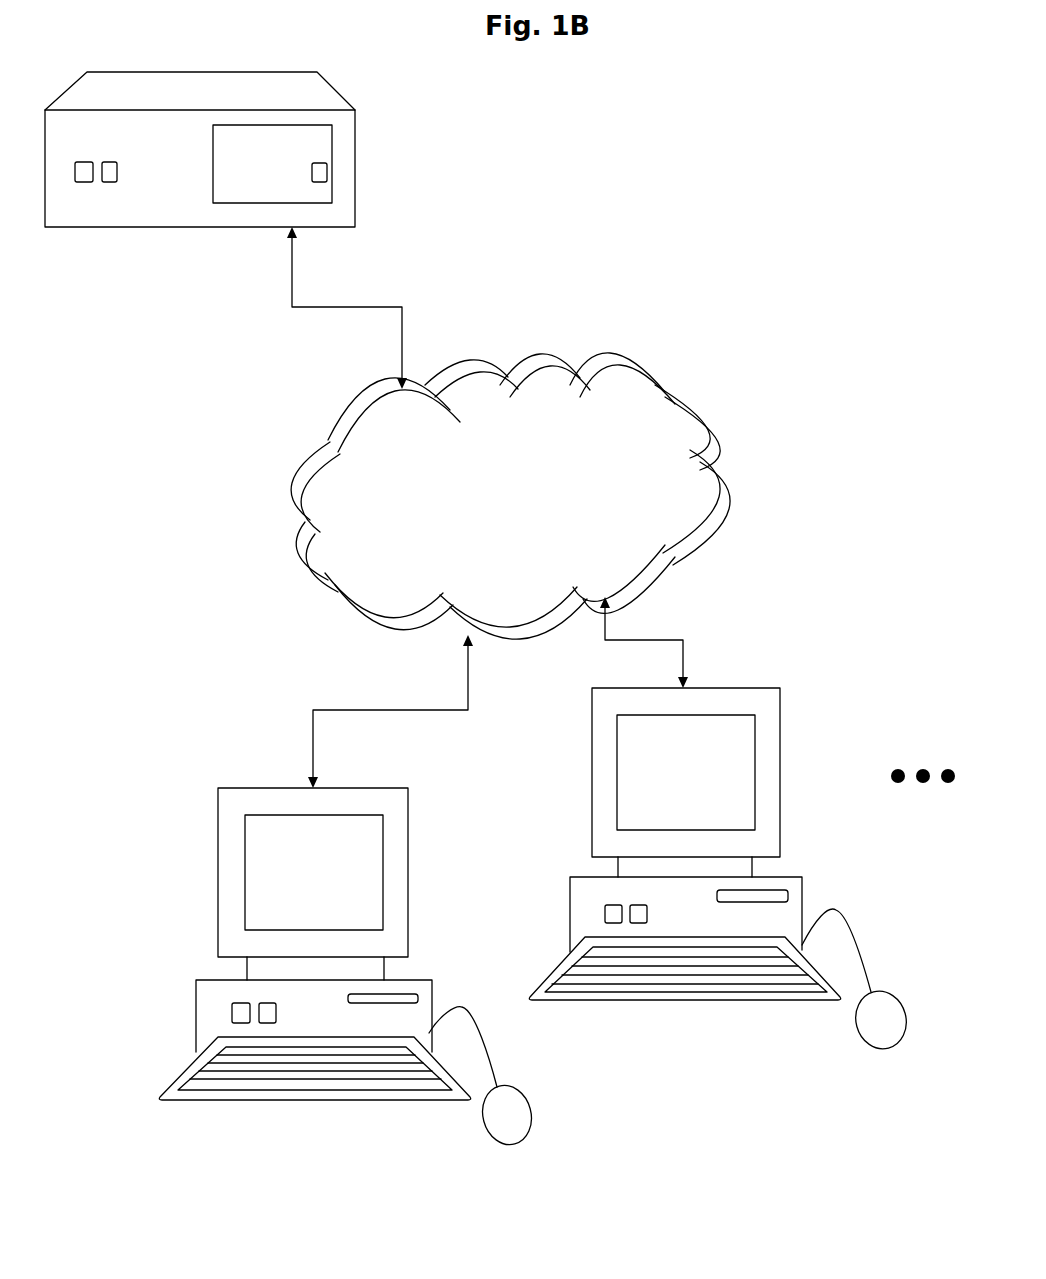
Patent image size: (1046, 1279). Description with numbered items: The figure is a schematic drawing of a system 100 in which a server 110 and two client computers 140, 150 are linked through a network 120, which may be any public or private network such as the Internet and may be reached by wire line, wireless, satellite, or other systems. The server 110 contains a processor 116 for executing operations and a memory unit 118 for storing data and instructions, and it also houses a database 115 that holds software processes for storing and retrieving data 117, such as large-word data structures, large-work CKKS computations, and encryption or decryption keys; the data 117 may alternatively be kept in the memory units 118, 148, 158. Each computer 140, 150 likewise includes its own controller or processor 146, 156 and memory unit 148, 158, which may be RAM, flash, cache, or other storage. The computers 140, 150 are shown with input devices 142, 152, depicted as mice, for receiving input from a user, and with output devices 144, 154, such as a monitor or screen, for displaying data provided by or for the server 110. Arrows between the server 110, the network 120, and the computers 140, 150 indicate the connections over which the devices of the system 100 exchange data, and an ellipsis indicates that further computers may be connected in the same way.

The system 100 is at (794, 230).
The server 110 is at (218, 98).
The database 115 is at (278, 167).
The processor 116 is at (83, 182).
The data 117 is at (318, 183).
The memory unit 118 is at (107, 162).
The network 120 is at (510, 496).
The computer 140 is at (352, 928).
The input device 142 is at (520, 1093).
The output device 144 is at (354, 867).
The processor 146 is at (222, 1005).
The memory unit 148 is at (257, 1003).
The computer 150 is at (724, 830).
The input device 152 is at (895, 995).
The output device 154 is at (726, 770).
The processor 156 is at (603, 912).
The memory unit 158 is at (630, 905).